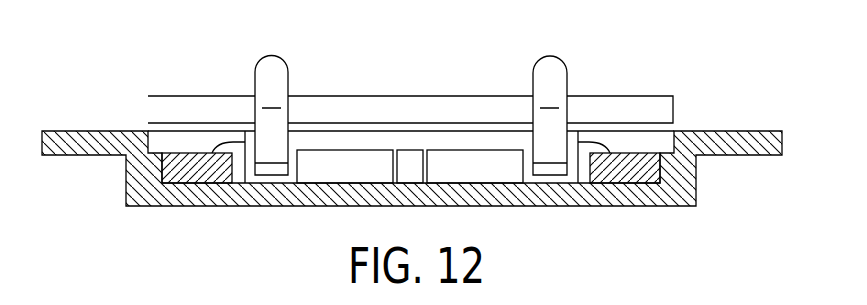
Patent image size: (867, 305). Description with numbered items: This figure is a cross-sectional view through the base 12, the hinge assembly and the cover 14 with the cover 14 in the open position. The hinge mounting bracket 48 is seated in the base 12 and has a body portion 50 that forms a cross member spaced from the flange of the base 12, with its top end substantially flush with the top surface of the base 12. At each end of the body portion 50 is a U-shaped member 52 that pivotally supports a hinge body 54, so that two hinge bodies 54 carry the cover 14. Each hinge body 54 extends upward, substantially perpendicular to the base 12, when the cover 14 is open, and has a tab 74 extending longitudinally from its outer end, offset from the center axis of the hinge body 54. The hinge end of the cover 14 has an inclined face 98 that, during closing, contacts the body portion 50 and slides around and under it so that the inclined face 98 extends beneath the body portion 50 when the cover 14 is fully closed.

The base 12 is at (730, 158).
The cover 14 is at (677, 107).
The inclined face 98 is at (430, 111).
The body portion 50 is at (358, 142).
The hinge mounting bracket 48 is at (522, 165).
The U-shaped member 52 is at (212, 153).
The hinge body 54 is at (291, 77).
The tab 74 is at (255, 77).